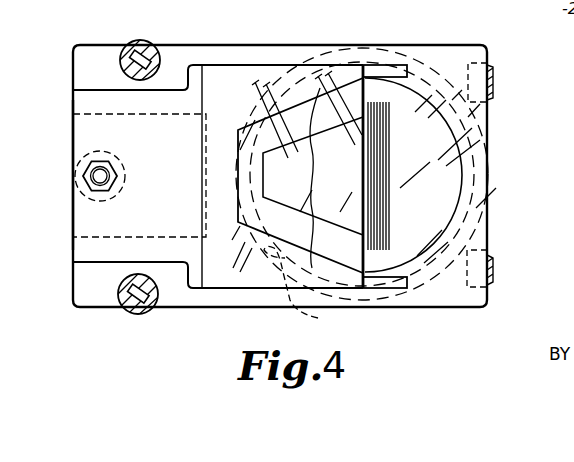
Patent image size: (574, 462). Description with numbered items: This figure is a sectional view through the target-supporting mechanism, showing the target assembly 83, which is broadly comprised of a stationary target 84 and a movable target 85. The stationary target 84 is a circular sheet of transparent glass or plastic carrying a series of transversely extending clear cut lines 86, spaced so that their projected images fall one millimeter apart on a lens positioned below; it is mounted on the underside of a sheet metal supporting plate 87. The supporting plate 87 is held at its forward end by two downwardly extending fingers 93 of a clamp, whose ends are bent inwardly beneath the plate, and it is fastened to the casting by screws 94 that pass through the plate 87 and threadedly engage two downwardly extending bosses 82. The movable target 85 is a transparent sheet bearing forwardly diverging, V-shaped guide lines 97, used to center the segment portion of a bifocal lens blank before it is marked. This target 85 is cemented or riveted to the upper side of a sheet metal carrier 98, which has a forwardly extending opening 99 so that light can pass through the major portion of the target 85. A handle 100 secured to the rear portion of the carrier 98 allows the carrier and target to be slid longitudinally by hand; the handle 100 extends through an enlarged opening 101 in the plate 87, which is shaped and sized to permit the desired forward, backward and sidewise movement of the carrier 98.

The downwardly extending bosses 82 is at (153, 68).
The target assembly 83 is at (189, 315).
The stationary target 84 is at (433, 189).
The movable target 85 is at (305, 116).
The clear cut lines 86 is at (371, 250).
The supporting plate 87 is at (478, 128).
The downwardly extending fingers 93 is at (495, 84).
The screws 94 is at (151, 52).
The V-shaped guide lines 97 is at (314, 178).
The carrier 98 is at (97, 137).
The forwardly extending opening 99 is at (303, 290).
The handle 100 is at (82, 197).
The enlarged opening 101 is at (103, 234).